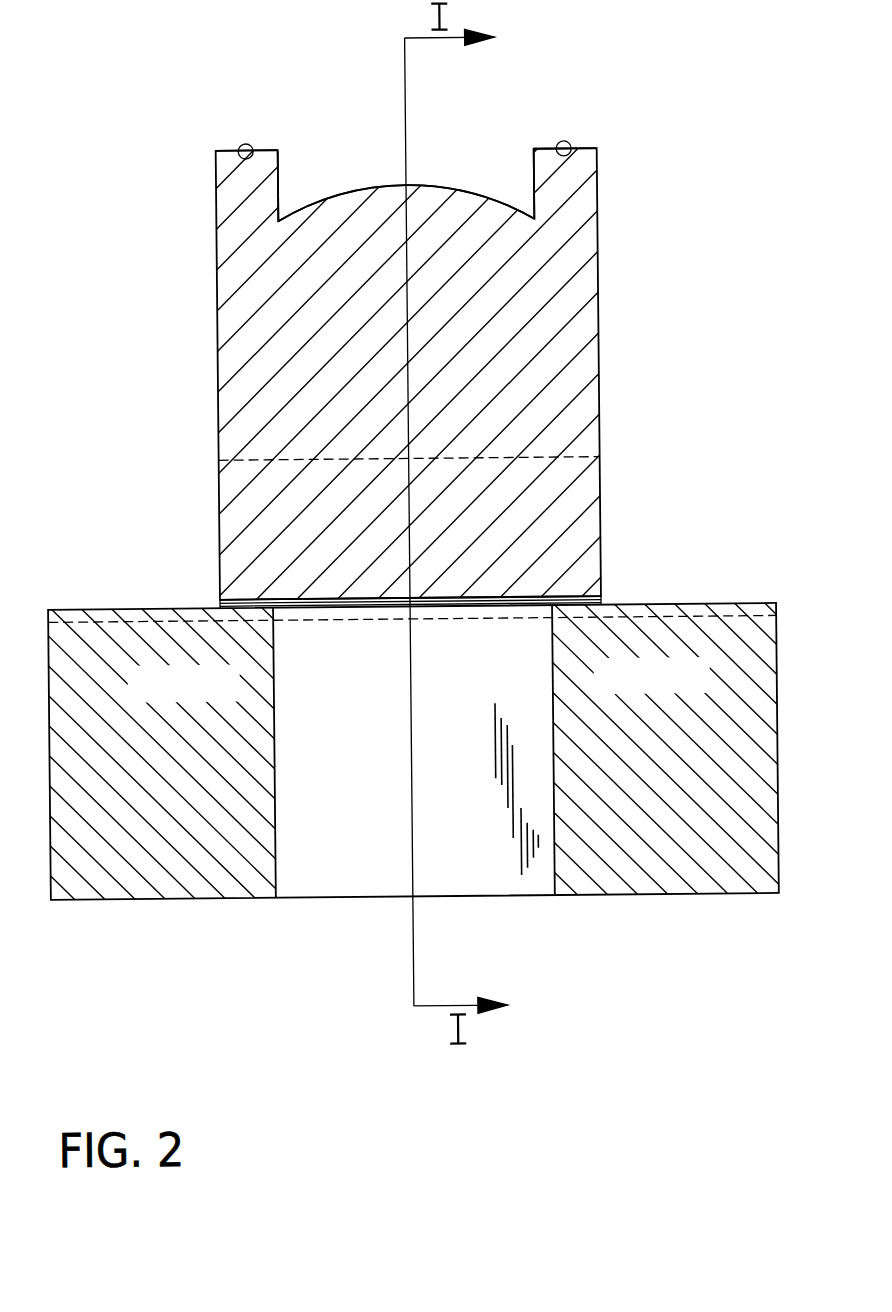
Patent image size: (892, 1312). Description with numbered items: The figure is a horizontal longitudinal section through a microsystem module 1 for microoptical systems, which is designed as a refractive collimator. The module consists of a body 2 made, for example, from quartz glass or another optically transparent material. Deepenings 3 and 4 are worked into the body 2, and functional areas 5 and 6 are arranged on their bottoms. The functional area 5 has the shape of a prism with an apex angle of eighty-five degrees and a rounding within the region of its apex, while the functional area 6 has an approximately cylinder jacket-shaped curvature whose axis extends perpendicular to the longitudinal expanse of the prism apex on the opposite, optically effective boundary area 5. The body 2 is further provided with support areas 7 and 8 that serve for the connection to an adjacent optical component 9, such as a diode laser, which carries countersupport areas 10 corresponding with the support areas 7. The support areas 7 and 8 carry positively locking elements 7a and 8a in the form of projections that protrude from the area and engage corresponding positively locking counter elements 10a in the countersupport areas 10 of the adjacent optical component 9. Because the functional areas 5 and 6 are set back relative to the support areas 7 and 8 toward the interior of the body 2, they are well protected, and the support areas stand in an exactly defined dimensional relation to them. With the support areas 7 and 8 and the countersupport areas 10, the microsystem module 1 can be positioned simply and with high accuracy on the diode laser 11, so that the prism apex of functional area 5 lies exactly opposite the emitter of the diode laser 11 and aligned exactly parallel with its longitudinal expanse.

The microsystem module 1 is at (140, 272).
The body 2 is at (551, 327).
The deepening 3 is at (276, 600).
The deepening 4 is at (477, 174).
The functional area 5 is at (466, 542).
The functional area 6 is at (484, 194).
The support area 7 is at (308, 598).
The positively locking element 7a is at (234, 608).
The support area 8 is at (231, 150).
The positively locking element 8a is at (250, 148).
The adjacent optical component 9 is at (670, 826).
The countersupport area 10 is at (253, 608).
The positively locking counter element 10a is at (127, 612).
The diode laser 11 is at (300, 824).